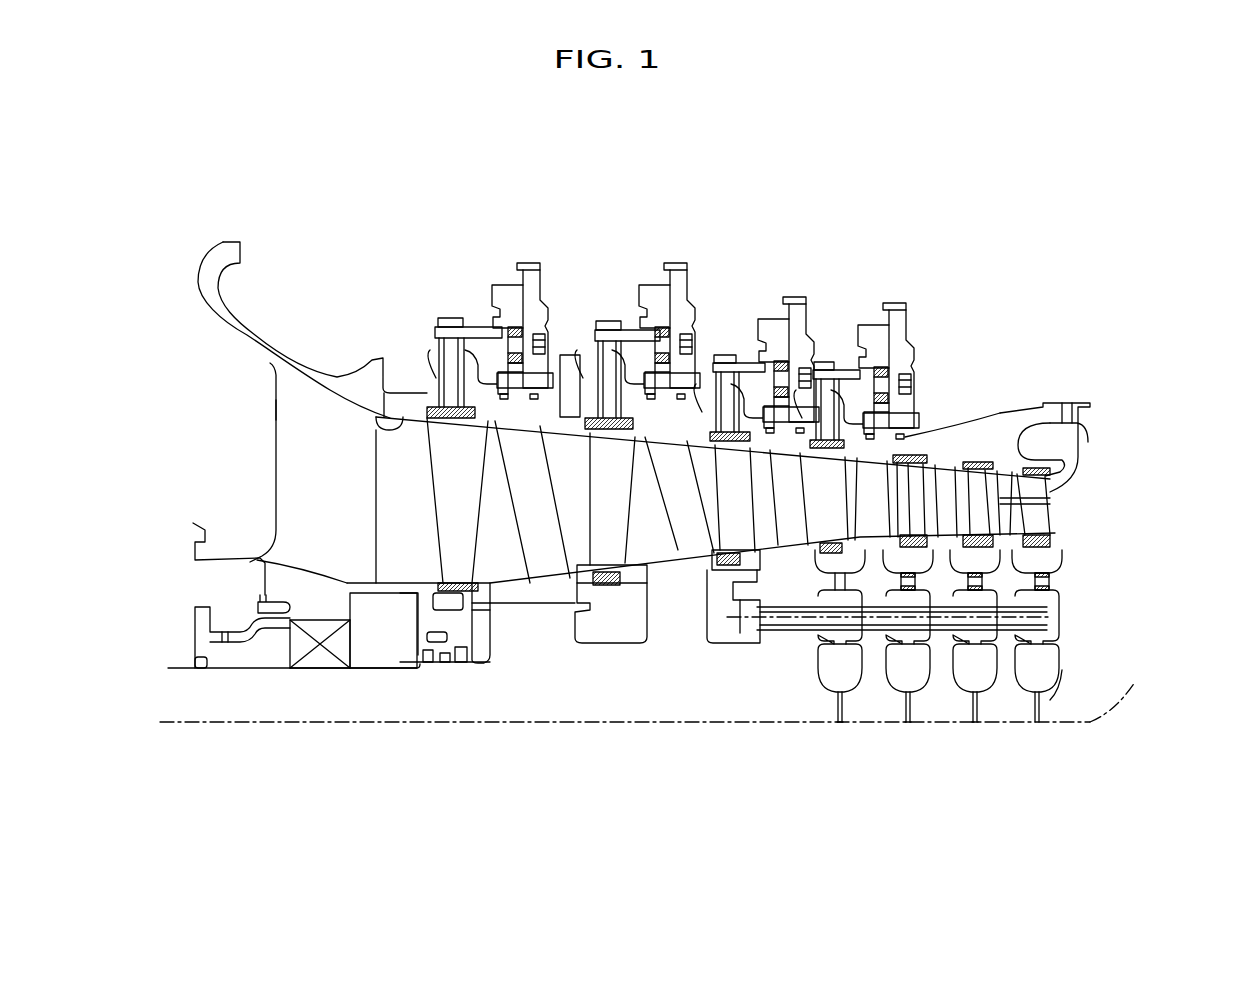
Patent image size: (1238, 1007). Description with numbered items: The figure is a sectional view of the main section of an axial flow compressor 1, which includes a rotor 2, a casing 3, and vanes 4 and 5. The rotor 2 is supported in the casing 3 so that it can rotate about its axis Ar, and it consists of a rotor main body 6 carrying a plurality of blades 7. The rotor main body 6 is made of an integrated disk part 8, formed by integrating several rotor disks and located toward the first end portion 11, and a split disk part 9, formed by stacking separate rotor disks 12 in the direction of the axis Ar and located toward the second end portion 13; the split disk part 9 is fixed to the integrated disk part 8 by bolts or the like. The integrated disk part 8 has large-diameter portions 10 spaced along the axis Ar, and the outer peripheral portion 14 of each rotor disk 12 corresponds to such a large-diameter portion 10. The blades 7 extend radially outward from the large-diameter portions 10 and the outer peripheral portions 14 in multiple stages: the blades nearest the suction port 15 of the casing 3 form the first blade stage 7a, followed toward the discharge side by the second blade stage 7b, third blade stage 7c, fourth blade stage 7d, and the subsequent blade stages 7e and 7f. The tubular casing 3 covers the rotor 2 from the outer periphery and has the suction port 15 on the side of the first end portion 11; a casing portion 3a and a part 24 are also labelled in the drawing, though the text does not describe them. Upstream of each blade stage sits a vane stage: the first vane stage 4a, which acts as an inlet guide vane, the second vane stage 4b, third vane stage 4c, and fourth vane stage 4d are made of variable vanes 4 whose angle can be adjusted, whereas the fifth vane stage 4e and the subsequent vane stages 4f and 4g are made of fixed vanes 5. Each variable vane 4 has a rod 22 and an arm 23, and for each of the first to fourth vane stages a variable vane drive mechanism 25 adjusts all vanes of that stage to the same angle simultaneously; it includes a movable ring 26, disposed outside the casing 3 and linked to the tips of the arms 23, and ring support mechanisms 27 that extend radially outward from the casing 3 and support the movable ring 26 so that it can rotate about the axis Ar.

The axial flow compressor 1 is at (437, 165).
The rotor 2 is at (228, 658).
The casing 3 is at (303, 355).
The casing flange 3a is at (378, 408).
The vane 4 is at (740, 366).
The first vane stage 4a is at (425, 470).
The second vane stage 4b is at (605, 465).
The third vane stage 4c is at (722, 470).
The fourth vane stage 4d is at (840, 492).
The fifth vane stage 4e is at (915, 485).
The sixth stator vane row 4f is at (967, 482).
The outlet stator vane row 4g is at (1077, 403).
The vane 5 is at (1040, 515).
The rotor main body 6 is at (776, 682).
The blade 7 is at (682, 640).
The first blade stage 7a is at (518, 527).
The second blade stage 7b is at (655, 490).
The third blade stage 7c is at (785, 595).
The fourth blade stage 7d is at (870, 555).
The fifth rotor blade row 7e is at (1040, 522).
The sixth rotor blade row 7f is at (1050, 530).
The integrated disk part 8 is at (550, 703).
The split disk part 9 is at (890, 707).
The large-diameter portion 10 is at (503, 627).
The first end portion 11 is at (168, 668).
The rotor disk 12 is at (858, 708).
The second end portion 13 is at (1033, 708).
The outer peripheral portion 14 is at (1042, 580).
The suction port 15 is at (193, 524).
The rod 22 is at (450, 375).
The arm 23 is at (475, 335).
The intake 24 is at (389, 463).
The variable vane drive mechanism 25 is at (529, 258).
The movable ring 26 is at (508, 288).
The ring support mechanism 27 is at (545, 295).
The axis Ar is at (1120, 684).